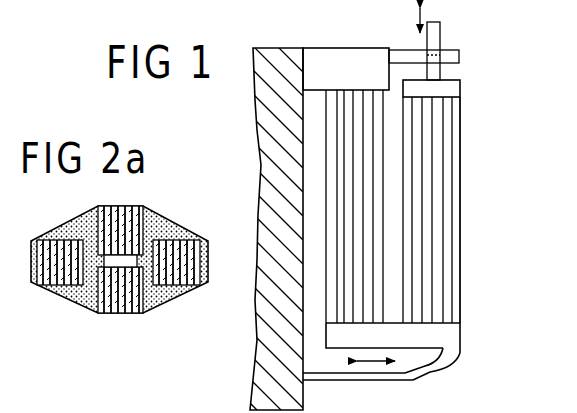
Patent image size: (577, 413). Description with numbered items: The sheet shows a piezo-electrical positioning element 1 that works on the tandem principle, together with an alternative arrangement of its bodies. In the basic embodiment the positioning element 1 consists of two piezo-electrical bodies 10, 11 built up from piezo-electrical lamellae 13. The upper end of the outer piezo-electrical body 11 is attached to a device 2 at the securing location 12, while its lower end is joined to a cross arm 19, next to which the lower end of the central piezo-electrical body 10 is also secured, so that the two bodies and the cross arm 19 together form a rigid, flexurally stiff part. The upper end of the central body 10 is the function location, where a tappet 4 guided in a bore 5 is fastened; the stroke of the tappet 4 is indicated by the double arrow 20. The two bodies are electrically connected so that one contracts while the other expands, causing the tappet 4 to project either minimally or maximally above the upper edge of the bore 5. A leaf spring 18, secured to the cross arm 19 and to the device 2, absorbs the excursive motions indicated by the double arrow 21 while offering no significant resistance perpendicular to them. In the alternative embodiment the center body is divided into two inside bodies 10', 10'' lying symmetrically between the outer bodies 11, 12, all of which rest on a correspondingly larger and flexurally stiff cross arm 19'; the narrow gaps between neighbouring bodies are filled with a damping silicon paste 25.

In FIG. 1, the positioning element 1 is at (474, 258).
In FIG. 1, the device 2 is at (265, 222).
In FIG. 1, the tappet 4 is at (442, 30).
In FIG. 1, the bore 5 is at (442, 53).
In FIG. 1, the piezo-electrical body 10 is at (453, 201).
In FIG. 2a, the inside piezo-electrical body 10' is at (120, 281).
In FIG. 2a, the inside piezo-electrical body 10'' is at (119, 242).
In FIG. 1, the piezo-electrical body 11 is at (360, 203).
In FIG. 2a, the piezo-electrical body 11 is at (177, 288).
In FIG. 1, the securing location 12 is at (342, 93).
In FIG. 2a, the securing location 12 is at (62, 286).
In FIG. 1, the piezo-electrical lamellae 13 is at (460, 227).
In FIG. 1, the leaf spring 18 is at (432, 368).
In FIG. 1, the cross arm 19 is at (418, 333).
In FIG. 2a, the cross arm 19' is at (174, 326).
In FIG. 1, the double arrow 20 is at (418, 15).
In FIG. 1, the double arrow 21 is at (375, 362).
In FIG. 2a, the silicon paste 25 is at (95, 270).